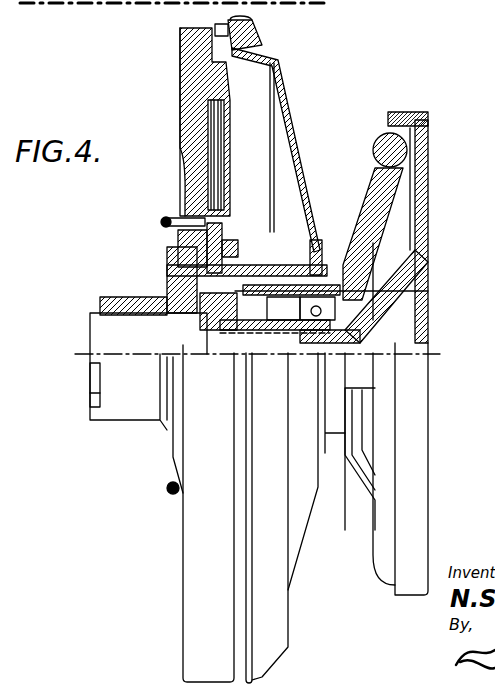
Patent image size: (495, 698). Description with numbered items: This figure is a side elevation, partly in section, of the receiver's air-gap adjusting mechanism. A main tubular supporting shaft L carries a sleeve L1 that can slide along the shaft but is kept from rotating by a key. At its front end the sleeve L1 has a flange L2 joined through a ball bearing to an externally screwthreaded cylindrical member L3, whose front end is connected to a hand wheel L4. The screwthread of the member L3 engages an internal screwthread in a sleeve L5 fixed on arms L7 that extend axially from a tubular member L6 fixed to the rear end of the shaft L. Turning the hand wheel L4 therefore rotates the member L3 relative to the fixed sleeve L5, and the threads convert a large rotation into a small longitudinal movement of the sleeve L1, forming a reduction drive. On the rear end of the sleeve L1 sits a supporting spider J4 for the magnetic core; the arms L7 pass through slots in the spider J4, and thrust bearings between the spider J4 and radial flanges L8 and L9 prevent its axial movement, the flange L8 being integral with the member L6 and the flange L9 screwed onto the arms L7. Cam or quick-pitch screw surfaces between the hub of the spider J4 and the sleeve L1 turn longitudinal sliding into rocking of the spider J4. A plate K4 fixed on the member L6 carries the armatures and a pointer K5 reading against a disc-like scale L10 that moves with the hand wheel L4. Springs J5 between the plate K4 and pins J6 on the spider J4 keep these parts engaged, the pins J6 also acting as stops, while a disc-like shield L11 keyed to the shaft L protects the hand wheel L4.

The plate K4 is at (195, 70).
The pointer K5 is at (265, 38).
The disc-like scale L10 is at (280, 105).
The supporting spider J4 is at (233, 143).
The springs J5 is at (163, 218).
The pins J6 is at (187, 217).
The radial flange L8 is at (177, 242).
The tubular member L6 is at (173, 267).
The radial flange L9 is at (247, 262).
The arms L7 is at (265, 260).
The sleeve L5 is at (290, 262).
The hand wheel L4 is at (407, 150).
The disc-like shield L11 is at (427, 197).
The externally screwthreaded cylindrical member L3 is at (428, 291).
The flange L2 is at (345, 340).
The sleeve L1 is at (200, 318).
The main tubular supporting shaft L is at (120, 410).